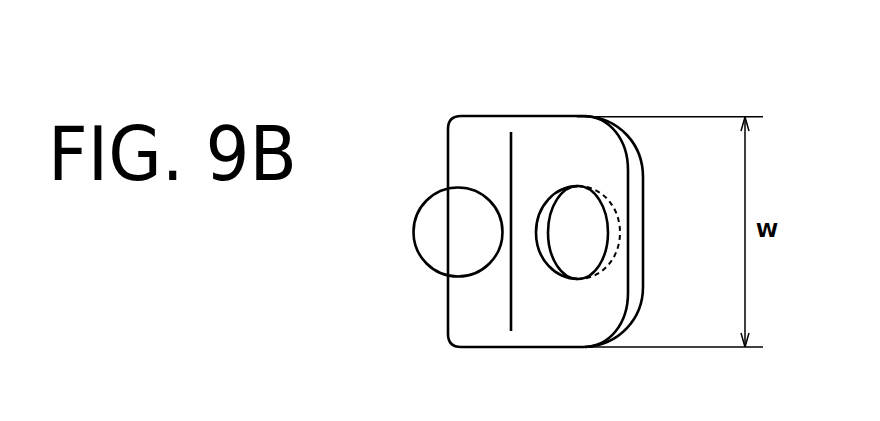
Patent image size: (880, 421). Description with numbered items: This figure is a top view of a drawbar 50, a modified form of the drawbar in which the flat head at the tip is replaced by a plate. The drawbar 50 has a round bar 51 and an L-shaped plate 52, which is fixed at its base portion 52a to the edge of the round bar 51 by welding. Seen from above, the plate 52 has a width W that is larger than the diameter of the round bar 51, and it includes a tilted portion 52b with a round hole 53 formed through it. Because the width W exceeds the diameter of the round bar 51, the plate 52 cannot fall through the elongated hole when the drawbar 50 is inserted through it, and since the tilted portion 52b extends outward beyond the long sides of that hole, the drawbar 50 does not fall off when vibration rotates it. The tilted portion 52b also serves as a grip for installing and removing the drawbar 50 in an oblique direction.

The drawbar 50 is at (556, 213).
The round bar 51 is at (437, 205).
The L-shaped plate 52 is at (466, 113).
The base portion 52a is at (485, 330).
The tilted portion 52b is at (552, 330).
The round hole 53 is at (594, 230).